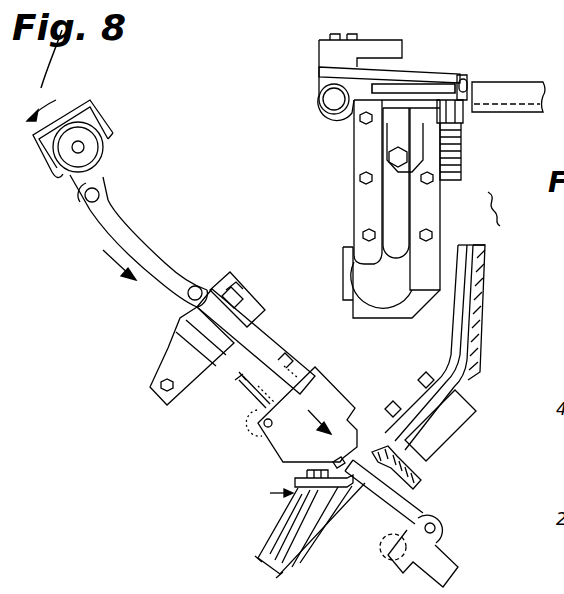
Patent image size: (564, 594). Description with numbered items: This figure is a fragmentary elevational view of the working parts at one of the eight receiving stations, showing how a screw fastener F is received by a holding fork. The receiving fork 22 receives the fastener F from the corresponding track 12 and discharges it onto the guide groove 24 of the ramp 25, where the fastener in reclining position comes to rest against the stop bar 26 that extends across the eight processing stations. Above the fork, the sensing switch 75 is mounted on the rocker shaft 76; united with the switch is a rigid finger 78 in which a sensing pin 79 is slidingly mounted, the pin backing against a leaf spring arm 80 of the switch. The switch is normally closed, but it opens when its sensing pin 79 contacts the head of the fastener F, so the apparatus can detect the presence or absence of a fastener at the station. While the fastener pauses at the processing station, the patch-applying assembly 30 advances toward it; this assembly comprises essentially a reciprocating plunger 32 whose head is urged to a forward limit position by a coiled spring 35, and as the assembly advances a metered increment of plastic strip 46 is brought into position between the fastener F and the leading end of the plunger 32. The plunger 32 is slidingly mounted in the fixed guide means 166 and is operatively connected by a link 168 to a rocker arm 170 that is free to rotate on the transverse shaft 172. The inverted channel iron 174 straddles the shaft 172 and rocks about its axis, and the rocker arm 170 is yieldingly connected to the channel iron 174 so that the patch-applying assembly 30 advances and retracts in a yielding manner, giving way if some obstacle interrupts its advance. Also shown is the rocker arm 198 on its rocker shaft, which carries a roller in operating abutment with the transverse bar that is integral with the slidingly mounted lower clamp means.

The inverted channel iron 174 is at (107, 120).
The transverse shaft 172 is at (93, 150).
The rocker arm 170 is at (105, 180).
The link 168 is at (142, 237).
The fixed guide means 166 is at (236, 272).
The reciprocating plunger 32 is at (247, 344).
The coiled spring 35 is at (297, 368).
The plastic strip 46 is at (256, 400).
The patch-applying assembly 30 is at (302, 443).
The stop bar 26 is at (297, 491).
The rocker arm 198 is at (452, 565).
The guide groove 24 is at (450, 350).
The ramp 25 is at (470, 380).
The receiving fork 22 is at (418, 117).
The sensing switch 75 is at (380, 53).
The rocker shaft 76 is at (333, 110).
The rigid finger 78 is at (404, 77).
The leaf spring arm 80 is at (462, 75).
The sensing pin 79 is at (466, 78).
The track 12 is at (517, 87).
The fastener F is at (462, 166).